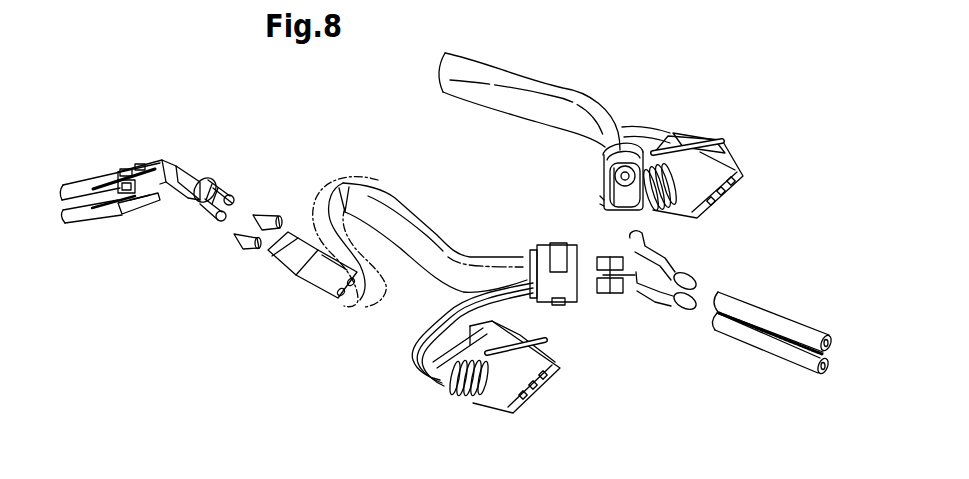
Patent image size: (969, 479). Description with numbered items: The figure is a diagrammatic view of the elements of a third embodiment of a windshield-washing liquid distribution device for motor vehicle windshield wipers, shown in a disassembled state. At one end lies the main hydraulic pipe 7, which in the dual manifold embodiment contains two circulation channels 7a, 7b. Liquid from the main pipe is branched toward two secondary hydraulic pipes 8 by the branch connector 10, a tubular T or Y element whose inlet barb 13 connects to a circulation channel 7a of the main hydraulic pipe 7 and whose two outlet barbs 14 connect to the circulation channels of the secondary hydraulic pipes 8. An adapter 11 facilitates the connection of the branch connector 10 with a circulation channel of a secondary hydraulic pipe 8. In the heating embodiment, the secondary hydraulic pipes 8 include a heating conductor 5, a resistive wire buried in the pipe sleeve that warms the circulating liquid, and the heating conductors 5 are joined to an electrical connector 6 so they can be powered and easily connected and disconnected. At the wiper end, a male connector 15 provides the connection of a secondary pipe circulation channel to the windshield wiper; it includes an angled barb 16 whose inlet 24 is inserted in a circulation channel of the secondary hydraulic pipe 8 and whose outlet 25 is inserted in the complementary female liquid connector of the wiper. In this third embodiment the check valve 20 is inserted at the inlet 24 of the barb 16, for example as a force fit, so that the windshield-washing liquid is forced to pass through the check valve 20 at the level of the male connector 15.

The heating conductor 5 is at (640, 134).
The electrical connector 6 is at (740, 150).
The main hydraulic pipe 7 is at (772, 355).
The circulation channel 7a is at (827, 340).
The circulation channel 7b is at (830, 368).
The secondary hydraulic pipe 8 is at (372, 186).
The branch connector 10 is at (657, 245).
The adapter 11 is at (605, 175).
The barb 13 is at (700, 272).
The barb 14 is at (613, 255).
The male connector 15 is at (202, 176).
The barb 16 is at (180, 185).
The check valve 20 is at (262, 213).
The inlet 24 is at (212, 193).
The outlet 25 is at (80, 197).